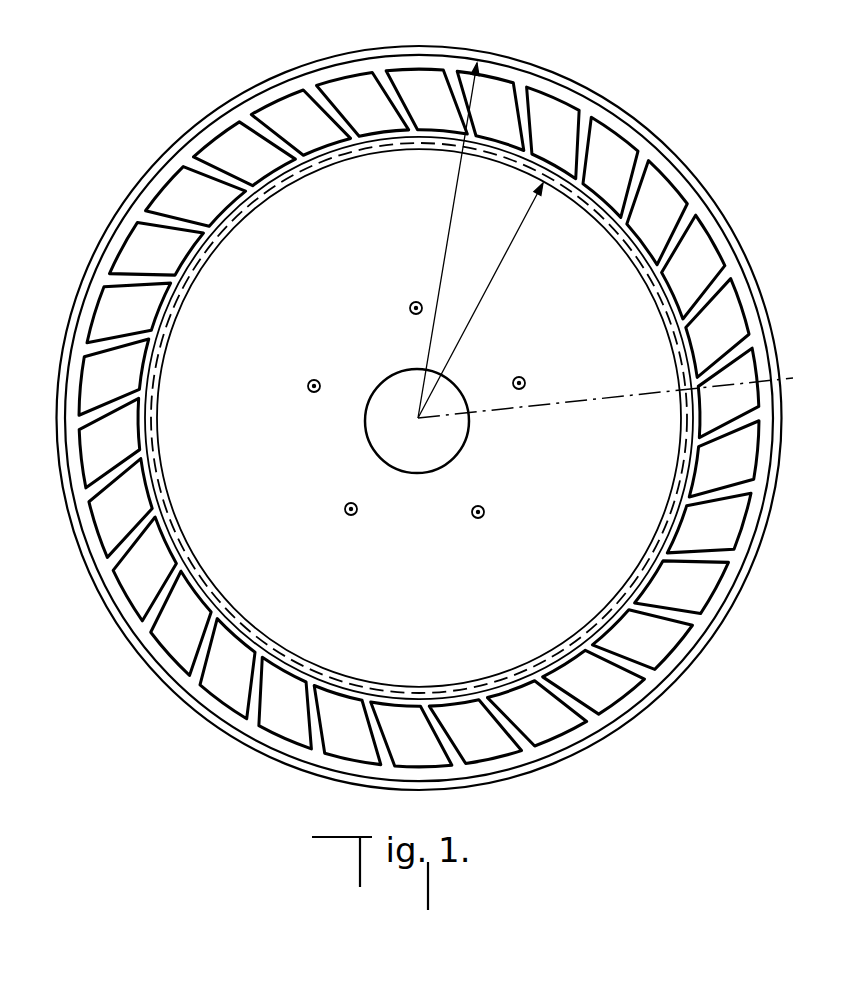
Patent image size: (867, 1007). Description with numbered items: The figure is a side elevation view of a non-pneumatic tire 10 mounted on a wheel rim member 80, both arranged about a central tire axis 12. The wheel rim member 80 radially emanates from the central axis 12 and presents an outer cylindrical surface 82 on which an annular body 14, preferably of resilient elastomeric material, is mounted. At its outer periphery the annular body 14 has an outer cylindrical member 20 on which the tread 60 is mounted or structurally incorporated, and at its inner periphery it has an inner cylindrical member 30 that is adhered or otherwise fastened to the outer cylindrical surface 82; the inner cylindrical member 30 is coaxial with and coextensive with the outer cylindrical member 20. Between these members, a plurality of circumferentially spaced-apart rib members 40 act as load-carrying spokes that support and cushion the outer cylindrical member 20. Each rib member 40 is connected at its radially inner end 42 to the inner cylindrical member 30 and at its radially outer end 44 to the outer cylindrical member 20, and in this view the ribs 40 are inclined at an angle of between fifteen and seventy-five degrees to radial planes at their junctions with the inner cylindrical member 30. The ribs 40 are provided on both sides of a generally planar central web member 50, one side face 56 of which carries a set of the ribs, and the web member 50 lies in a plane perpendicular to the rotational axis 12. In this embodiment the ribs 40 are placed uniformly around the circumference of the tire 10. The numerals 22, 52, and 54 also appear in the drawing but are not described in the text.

The non-pneumatic tire 10 is at (570, 62).
The central tire axis 12 is at (420, 420).
The annular body 14 is at (288, 108).
The outer cylindrical member 20 is at (566, 100).
The outer rim 22 is at (683, 177).
The inner cylindrical member 30 is at (650, 566).
The rib members 40 is at (133, 548).
The radially inner ends 42 is at (150, 500).
The radially outer ends 44 is at (110, 562).
The central web member 50 is at (99, 392).
The inner ring surface 52 is at (152, 320).
The slot edge 54 is at (93, 315).
The side face 56 is at (182, 197).
The tread 60 is at (717, 628).
The wheel rim member 80 is at (557, 314).
The outer cylindrical surface 82 is at (682, 410).